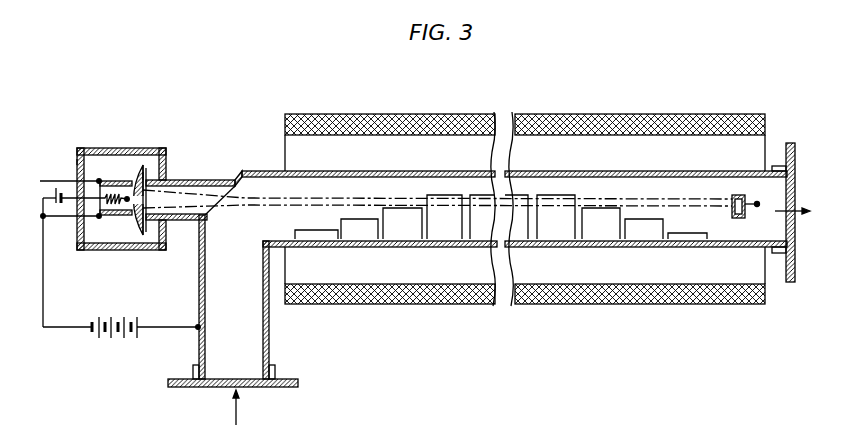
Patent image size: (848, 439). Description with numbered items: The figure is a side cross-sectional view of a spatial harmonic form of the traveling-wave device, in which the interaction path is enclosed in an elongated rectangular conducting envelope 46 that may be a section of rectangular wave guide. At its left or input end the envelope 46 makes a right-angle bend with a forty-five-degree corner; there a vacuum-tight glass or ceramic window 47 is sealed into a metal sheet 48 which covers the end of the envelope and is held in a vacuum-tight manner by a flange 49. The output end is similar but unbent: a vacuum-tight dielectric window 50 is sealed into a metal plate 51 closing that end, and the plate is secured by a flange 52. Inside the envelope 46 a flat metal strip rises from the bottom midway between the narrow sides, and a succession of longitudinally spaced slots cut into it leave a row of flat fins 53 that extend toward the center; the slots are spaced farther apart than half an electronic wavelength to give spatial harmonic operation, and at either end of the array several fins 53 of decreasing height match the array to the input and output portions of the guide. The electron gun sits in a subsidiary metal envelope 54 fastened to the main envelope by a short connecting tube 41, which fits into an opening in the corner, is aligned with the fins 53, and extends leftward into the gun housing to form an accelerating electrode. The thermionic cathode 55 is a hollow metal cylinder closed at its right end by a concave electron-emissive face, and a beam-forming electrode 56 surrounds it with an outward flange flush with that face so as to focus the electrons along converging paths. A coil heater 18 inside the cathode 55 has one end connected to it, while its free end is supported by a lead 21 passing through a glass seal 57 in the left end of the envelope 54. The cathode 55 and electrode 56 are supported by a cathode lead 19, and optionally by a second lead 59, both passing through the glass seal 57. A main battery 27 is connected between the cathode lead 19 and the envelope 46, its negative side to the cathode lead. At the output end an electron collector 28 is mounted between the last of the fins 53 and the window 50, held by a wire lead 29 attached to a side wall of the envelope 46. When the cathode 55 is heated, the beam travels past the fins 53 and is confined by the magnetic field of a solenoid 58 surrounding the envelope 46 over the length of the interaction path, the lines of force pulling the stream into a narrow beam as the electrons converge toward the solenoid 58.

The coil heater 18 is at (127, 199).
The cathode lead 19 is at (88, 198).
The heater lead 21 is at (88, 198).
The main battery 27 is at (108, 318).
The electron collector 28 is at (738, 218).
The wire lead 29 is at (757, 204).
The connecting tube 41 is at (203, 180).
The conducting envelope 46 is at (362, 171).
The window 47 is at (245, 389).
The metal sheet 48 is at (290, 389).
The flange 49 is at (275, 368).
The dielectric window 50 is at (796, 190).
The metal plate 51 is at (795, 257).
The flange 52 is at (784, 270).
The fins 53 is at (400, 208).
The subsidiary metal envelope 54 is at (115, 148).
The thermionic cathode 55 is at (139, 222).
The beam-forming electrode 56 is at (144, 176).
The glass seal 57 is at (77, 159).
The solenoid 58 is at (398, 114).
The second lead 59 is at (52, 181).